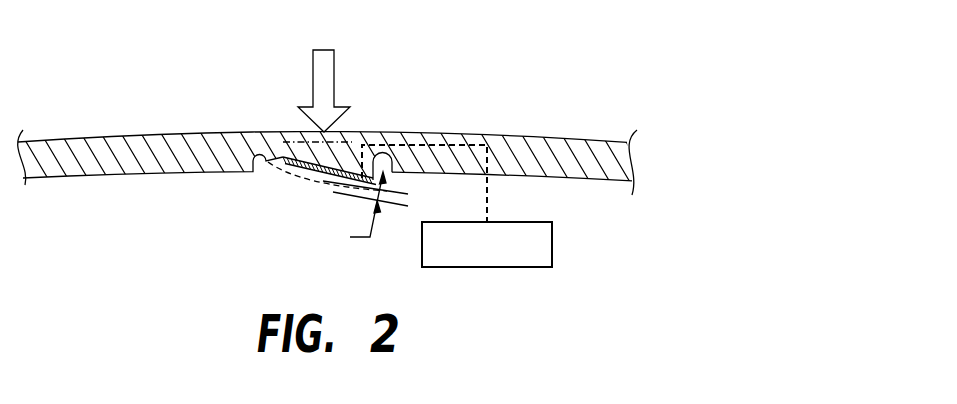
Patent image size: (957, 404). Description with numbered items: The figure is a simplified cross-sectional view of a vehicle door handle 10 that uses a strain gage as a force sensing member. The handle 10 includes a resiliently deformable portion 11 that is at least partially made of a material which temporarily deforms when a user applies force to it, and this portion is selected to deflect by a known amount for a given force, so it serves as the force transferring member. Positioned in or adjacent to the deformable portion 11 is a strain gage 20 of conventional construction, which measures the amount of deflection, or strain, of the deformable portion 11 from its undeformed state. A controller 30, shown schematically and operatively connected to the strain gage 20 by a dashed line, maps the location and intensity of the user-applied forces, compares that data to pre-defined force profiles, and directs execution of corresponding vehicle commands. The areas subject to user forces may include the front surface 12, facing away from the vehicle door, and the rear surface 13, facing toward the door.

The vehicle door handle 10 is at (335, 143).
The resiliently deformable portion 11 is at (310, 162).
The front surface 12 is at (198, 132).
The rear surface 13 is at (190, 172).
The strain gage 20 is at (322, 181).
The controller 30 is at (552, 237).